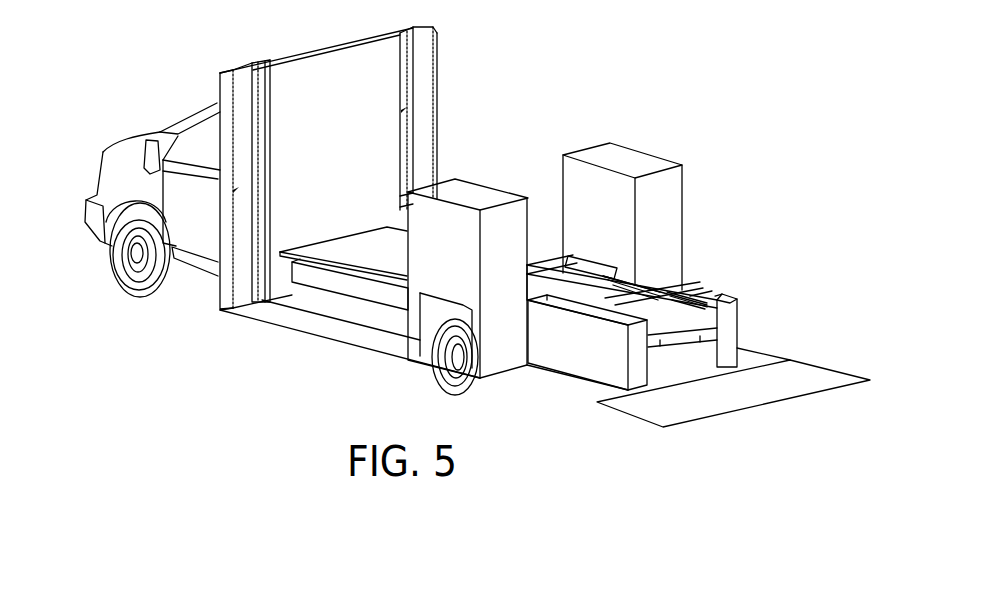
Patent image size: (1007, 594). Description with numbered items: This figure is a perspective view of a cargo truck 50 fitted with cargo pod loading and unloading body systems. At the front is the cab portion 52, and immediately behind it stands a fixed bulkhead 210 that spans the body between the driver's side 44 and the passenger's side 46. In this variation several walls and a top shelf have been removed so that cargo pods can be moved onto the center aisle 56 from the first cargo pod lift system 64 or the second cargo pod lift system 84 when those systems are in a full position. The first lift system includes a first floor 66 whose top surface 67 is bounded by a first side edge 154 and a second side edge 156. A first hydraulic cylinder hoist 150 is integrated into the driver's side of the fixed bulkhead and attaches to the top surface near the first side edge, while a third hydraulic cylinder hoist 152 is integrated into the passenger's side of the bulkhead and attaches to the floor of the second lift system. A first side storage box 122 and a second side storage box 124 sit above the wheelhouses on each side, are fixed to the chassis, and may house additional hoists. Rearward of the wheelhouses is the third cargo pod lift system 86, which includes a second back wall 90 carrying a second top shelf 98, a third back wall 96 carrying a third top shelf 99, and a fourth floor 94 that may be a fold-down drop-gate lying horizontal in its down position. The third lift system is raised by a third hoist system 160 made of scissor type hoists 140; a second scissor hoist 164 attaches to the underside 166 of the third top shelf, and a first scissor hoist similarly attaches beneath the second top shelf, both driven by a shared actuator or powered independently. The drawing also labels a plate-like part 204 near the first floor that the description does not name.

The driver's side 44 is at (243, 411).
The passenger's side 46 is at (619, 81).
The cargo truck 50 is at (168, 34).
The cab portion 52 is at (117, 141).
The center aisle 56 is at (543, 293).
The first cargo pod lift system 64 is at (268, 327).
The first floor 66 is at (288, 325).
The top surface 67 is at (362, 333).
The second cargo pod lift system 84 is at (403, 210).
The third cargo pod lift system 86 is at (762, 319).
The second back wall 90 is at (597, 362).
The fourth floor 94 is at (820, 386).
The third back wall 96 is at (739, 319).
The second top shelf 98 is at (605, 318).
The third top shelf 99 is at (706, 295).
The first side storage box 122 is at (469, 194).
The second side storage box 124 is at (640, 160).
The scissor type hoist 140 is at (650, 292).
The first hydraulic cylinder hoist 150 is at (257, 208).
The third hydraulic cylinder hoist 152 is at (404, 218).
The first side edge 154 is at (235, 309).
The second side edge 156 is at (418, 360).
The third hoist system 160 is at (681, 298).
The second scissor hoist 164 is at (677, 303).
The underside 166 is at (741, 314).
The slide plate 204 is at (343, 323).
The fixed bulkhead 210 is at (322, 75).